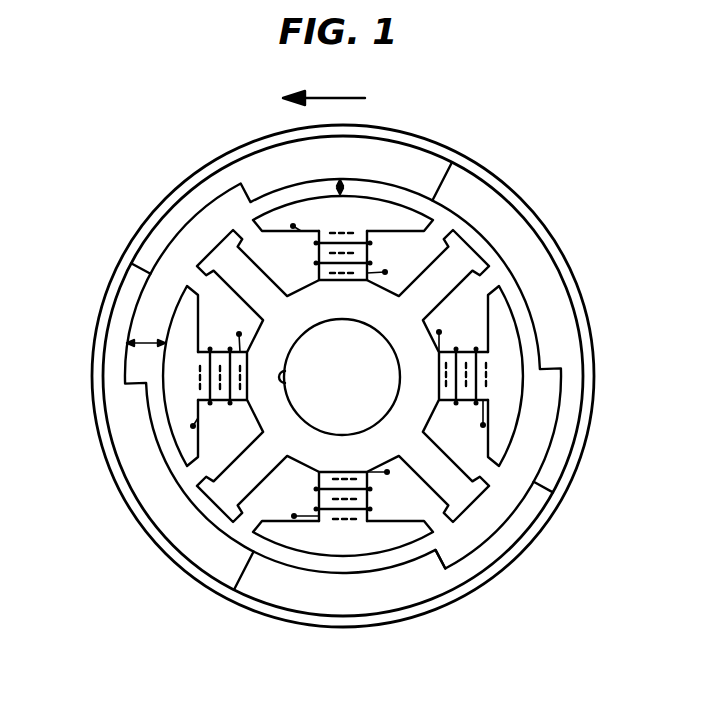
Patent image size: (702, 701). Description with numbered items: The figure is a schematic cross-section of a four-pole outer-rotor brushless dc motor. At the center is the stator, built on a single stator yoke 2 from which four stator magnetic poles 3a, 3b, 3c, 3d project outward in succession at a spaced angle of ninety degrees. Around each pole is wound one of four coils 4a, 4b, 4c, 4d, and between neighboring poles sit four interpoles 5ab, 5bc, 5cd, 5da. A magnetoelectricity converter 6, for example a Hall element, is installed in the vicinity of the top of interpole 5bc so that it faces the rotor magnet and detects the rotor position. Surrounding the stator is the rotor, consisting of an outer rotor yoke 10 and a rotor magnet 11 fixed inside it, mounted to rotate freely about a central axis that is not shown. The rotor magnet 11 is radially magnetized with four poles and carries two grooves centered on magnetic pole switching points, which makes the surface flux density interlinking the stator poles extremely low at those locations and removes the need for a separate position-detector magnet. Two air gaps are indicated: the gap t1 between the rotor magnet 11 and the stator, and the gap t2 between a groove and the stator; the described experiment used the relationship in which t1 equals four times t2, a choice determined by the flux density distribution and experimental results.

The stator yoke 2 is at (402, 436).
The stator magnetic pole 3a is at (343, 213).
The stator magnetic pole 3b is at (502, 376).
The stator magnetic pole 3c is at (343, 538).
The stator magnetic pole 3d is at (180, 376).
The coil 4a is at (352, 251).
The coil 4b is at (462, 385).
The coil 4c is at (334, 495).
The coil 4d is at (218, 372).
The interpole 5ab is at (460, 253).
The interpole 5bc is at (452, 518).
The interpole 5cd is at (212, 514).
The interpole 5da is at (205, 252).
The magnetoelectricity converter 6 is at (473, 548).
The rotor yoke 10 is at (458, 157).
The rotor magnet 11 is at (497, 208).
The gap between rotor magnet and stator t1 is at (342, 181).
The gap between groove and stator t2 is at (146, 344).